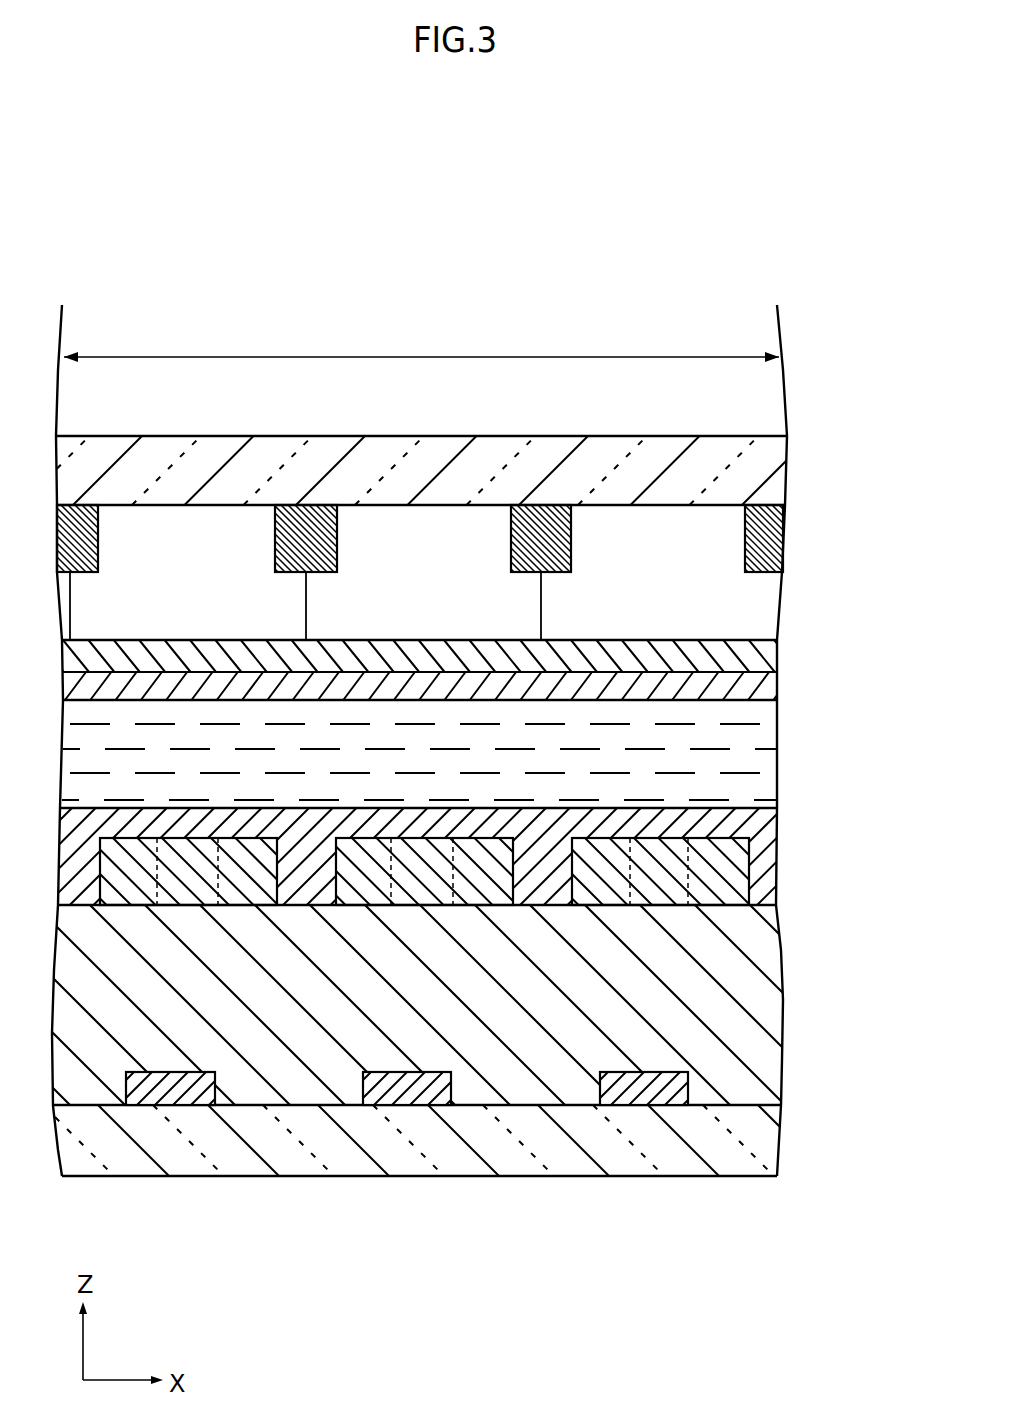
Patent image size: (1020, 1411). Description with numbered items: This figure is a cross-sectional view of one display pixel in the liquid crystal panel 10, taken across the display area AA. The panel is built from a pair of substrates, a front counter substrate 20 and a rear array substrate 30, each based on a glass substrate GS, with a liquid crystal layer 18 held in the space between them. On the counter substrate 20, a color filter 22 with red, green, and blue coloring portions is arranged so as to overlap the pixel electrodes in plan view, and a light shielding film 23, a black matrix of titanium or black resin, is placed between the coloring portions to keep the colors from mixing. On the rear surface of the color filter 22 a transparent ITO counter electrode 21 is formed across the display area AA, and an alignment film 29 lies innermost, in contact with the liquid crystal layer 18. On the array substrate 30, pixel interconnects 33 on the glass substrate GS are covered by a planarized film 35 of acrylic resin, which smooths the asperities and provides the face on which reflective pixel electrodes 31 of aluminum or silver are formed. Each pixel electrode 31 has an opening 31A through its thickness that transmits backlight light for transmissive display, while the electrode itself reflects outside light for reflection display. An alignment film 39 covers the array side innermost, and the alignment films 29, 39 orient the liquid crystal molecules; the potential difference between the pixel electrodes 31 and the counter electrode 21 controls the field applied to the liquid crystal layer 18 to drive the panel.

The liquid crystal panel 10 is at (451, 236).
The display area AA is at (421, 339).
The glass substrate GS is at (750, 478).
The light shielding film 23 is at (767, 535).
The color filter 22 is at (733, 600).
The counter electrode 21 is at (748, 655).
The alignment film 29 is at (750, 688).
The counter substrate 20 is at (858, 447).
The liquid crystal layer 18 is at (745, 760).
The alignment film 39 is at (750, 826).
The pixel electrode 31 is at (715, 880).
The opening 31A is at (698, 900).
The planarized film 35 is at (755, 1003).
The pixel interconnect 33 is at (657, 1090).
The array substrate 30 is at (858, 815).